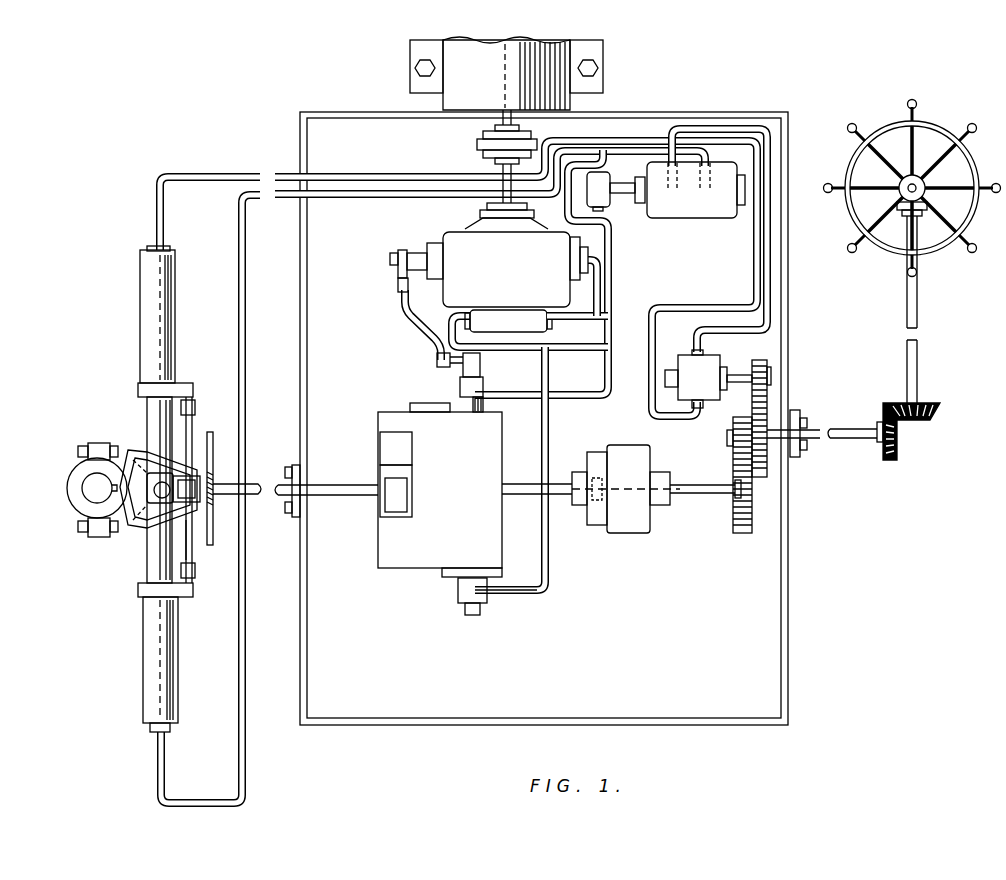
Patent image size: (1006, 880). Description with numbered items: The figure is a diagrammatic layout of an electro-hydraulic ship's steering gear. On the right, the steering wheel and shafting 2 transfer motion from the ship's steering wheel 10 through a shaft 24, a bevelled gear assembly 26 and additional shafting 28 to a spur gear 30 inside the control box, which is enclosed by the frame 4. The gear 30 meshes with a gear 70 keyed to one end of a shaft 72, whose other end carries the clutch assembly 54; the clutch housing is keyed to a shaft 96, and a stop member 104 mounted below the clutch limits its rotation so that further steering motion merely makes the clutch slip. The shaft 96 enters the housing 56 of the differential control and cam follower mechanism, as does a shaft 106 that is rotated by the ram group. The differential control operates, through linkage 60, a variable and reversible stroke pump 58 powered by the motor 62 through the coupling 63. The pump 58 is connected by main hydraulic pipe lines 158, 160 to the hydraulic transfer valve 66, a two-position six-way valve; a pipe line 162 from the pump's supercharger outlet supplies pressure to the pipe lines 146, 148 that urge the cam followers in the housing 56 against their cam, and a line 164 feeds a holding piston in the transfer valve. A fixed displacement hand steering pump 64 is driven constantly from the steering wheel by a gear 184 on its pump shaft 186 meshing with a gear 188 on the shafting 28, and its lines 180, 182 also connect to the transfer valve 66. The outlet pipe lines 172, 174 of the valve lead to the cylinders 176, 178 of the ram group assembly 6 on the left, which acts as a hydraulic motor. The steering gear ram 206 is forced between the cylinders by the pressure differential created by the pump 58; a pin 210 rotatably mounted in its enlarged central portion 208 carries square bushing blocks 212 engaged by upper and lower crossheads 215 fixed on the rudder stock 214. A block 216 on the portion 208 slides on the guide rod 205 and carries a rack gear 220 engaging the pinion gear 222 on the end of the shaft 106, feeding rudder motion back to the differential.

The steering wheel and shafting 2 is at (903, 264).
The frame 4 is at (789, 600).
The ram group assembly 6 is at (157, 489).
The steering wheel 10 is at (893, 125).
The shaft 24 is at (907, 360).
The bevelled gear assembly 26 is at (915, 437).
The shafting 28 is at (851, 430).
The spur gear 30 is at (750, 430).
The clutch assembly 54 is at (624, 513).
The housing 56 is at (413, 566).
The variable and reversible stroke pump 58 is at (507, 255).
The linkage 60 is at (418, 315).
The motor 62 is at (495, 84).
The coupling 63 is at (478, 144).
The fixed displacement hand steering pump 64 is at (690, 362).
The hydraulic transfer valve 66 is at (655, 218).
The gear 70 is at (737, 476).
The shaft 72 is at (705, 494).
The shaft 96 is at (520, 486).
The stop member 104 is at (593, 521).
The shaft 106 is at (350, 485).
The pipe line 146 is at (522, 398).
The pipe line 148 is at (523, 593).
The main hydraulic pipe line 158 is at (586, 321).
The main hydraulic pipe line 160 is at (518, 340).
The pipe line 162 is at (598, 272).
The line 164 is at (553, 238).
The pipe line 172 is at (229, 180).
The pipe line 174 is at (238, 232).
The cylinder 176 is at (143, 292).
The cylinder 178 is at (150, 670).
The line 180 is at (745, 303).
The line 182 is at (765, 326).
The gear 184 is at (768, 372).
The pump shaft 186 is at (740, 376).
The gear 188 is at (770, 442).
The guide rod 205 is at (190, 428).
The steering gear ram 206 is at (152, 422).
The enlarged central portion 208 is at (141, 540).
The pin 210 is at (160, 486).
The square bushing blocks 212 is at (186, 516).
The rudder stock 214 is at (90, 487).
The crossheads 215 is at (112, 530).
The block 216 is at (182, 492).
The rack gear 220 is at (214, 450).
The pinion gear 222 is at (214, 478).